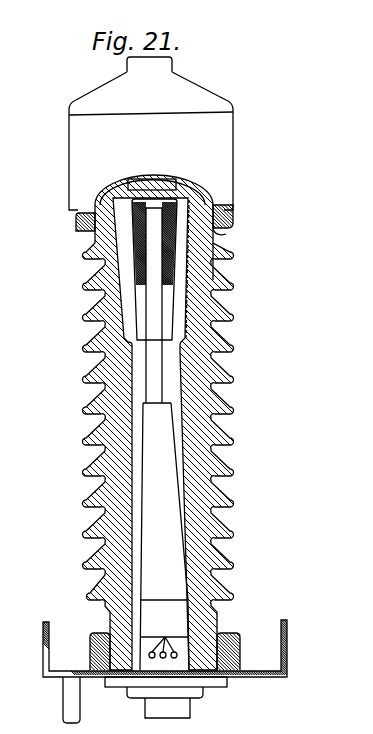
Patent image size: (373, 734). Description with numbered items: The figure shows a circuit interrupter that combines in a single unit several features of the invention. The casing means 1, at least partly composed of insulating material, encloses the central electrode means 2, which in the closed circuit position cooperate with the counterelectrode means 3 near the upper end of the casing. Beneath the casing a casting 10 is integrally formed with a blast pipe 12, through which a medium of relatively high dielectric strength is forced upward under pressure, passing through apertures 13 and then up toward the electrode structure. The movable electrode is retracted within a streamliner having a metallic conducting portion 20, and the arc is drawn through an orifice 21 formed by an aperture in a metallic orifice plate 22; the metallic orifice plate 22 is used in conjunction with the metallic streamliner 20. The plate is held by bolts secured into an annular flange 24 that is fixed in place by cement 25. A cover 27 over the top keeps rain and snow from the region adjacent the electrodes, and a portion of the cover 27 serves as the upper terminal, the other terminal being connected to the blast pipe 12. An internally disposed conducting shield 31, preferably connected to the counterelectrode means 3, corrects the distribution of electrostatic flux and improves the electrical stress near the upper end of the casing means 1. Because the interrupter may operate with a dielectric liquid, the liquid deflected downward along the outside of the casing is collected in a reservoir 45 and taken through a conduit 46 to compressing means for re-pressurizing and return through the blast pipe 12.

The casing means 1 is at (252, 410).
The central electrode means 2 is at (175, 304).
The counterelectrode means 3 is at (152, 179).
The casting 10 is at (138, 689).
The blast pipe 12 is at (190, 705).
The apertures 13 is at (165, 637).
The conducting portion of streamliner 20 is at (78, 231).
The orifice 21 is at (162, 180).
The metallic orifice plate 22 is at (195, 197).
The annular flange 24 is at (232, 218).
The cement 25 is at (221, 233).
The cover 27 is at (216, 93).
The conducting shield 31 is at (212, 268).
The reservoir 45 is at (288, 641).
The conduit 46 is at (62, 706).